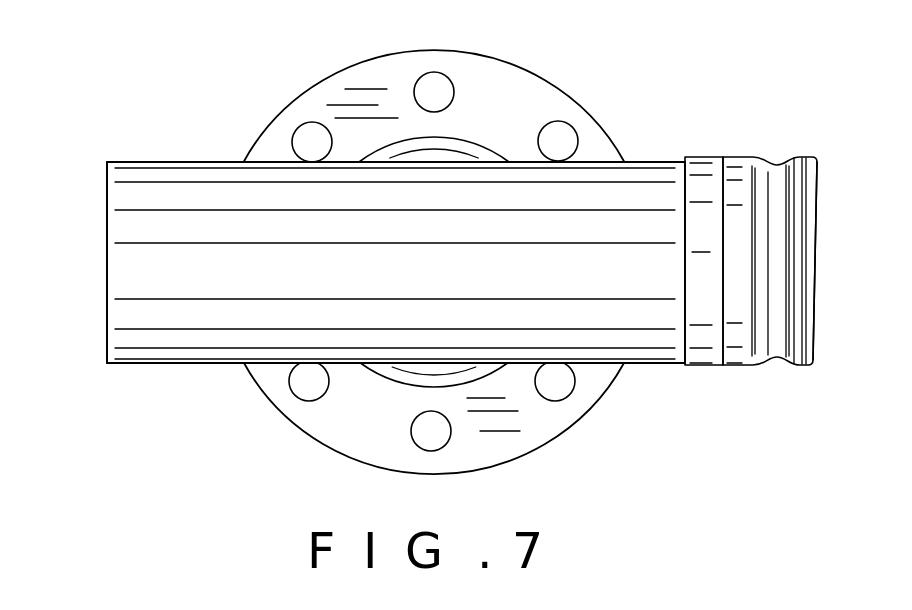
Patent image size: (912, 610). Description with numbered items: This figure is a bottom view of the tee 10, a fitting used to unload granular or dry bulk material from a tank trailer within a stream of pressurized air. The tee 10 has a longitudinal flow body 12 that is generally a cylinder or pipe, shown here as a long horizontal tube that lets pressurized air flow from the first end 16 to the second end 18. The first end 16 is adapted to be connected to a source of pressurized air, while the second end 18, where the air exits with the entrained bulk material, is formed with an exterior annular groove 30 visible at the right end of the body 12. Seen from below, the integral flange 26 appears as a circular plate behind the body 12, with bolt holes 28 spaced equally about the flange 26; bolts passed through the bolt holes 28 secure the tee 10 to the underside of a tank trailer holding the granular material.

The tee 10 is at (660, 119).
The longitudinal flow body 12 is at (222, 285).
The first end 16 is at (107, 302).
The second end 18 is at (818, 265).
The flange 26 is at (496, 88).
The bolt holes 28 is at (312, 140).
The exterior annular groove 30 is at (777, 162).